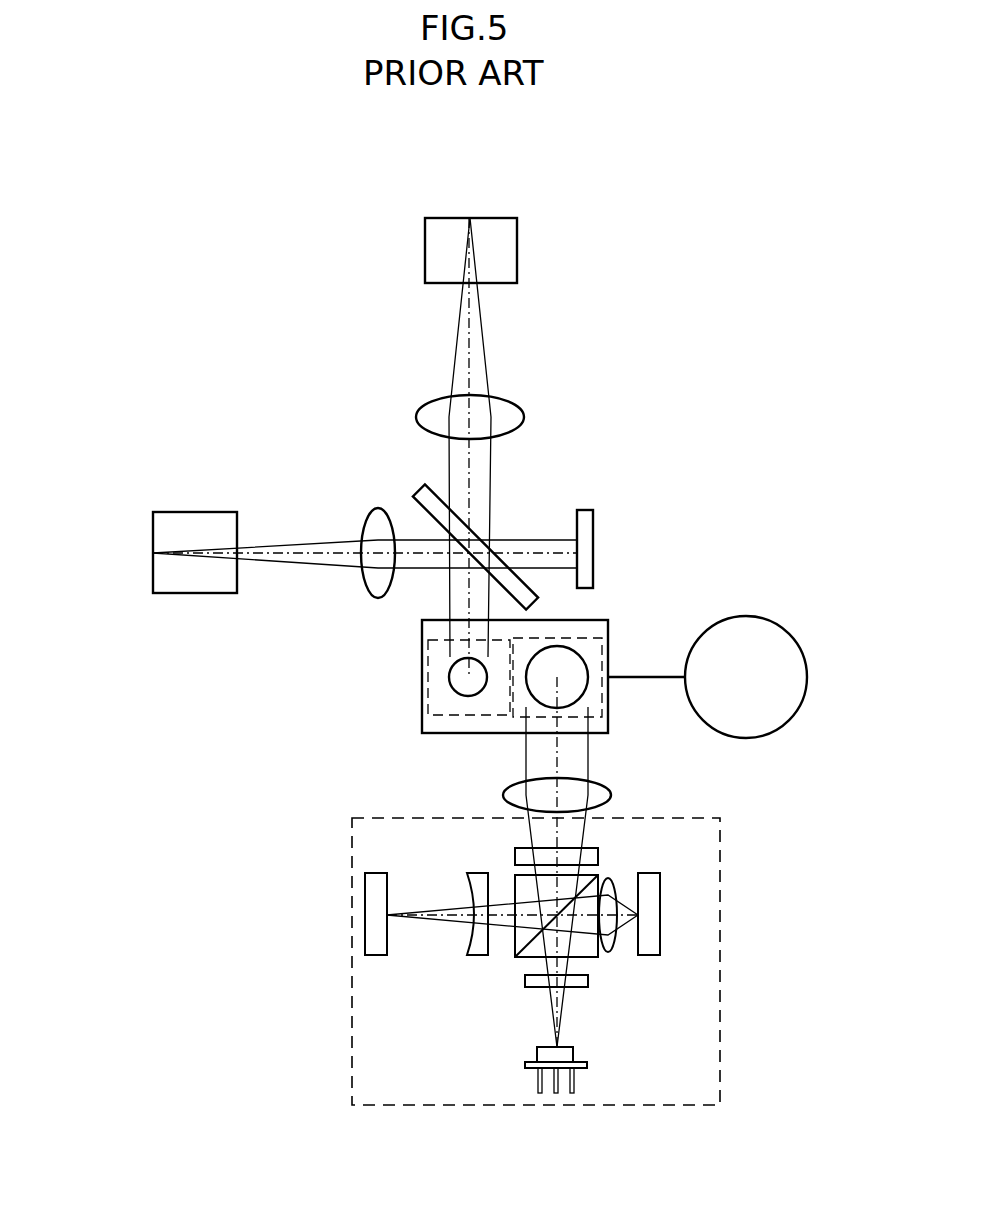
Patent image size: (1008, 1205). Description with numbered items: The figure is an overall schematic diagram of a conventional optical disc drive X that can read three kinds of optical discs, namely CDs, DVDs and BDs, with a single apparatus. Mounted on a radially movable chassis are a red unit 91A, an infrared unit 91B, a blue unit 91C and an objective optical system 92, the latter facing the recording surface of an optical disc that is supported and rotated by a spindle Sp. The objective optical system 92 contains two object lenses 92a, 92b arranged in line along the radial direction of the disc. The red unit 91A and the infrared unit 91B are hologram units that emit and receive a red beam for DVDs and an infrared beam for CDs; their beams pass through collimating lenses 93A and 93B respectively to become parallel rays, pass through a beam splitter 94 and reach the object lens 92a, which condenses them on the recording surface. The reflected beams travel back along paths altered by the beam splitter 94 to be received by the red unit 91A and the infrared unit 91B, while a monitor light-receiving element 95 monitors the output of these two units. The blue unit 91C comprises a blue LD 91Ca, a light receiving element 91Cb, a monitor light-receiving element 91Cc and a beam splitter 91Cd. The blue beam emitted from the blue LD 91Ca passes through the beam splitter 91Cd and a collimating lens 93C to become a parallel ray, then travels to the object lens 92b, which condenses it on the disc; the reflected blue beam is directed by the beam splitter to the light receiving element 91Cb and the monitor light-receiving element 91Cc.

The optical disc drive X is at (258, 322).
The red unit 91A is at (485, 217).
The infrared unit 91B is at (153, 553).
The collimating lens 93A is at (433, 400).
The collimating lens 93B is at (375, 510).
The collimating lens 93C is at (605, 793).
The beam splitter 94 is at (462, 522).
The monitor light-receiving element 95 is at (597, 517).
The objective optical system 92 is at (412, 712).
The object lens 92a is at (449, 680).
The object lens 92b is at (573, 652).
The spindle Sp is at (783, 643).
The blue unit 91C is at (524, 1002).
The blue LD 91Ca is at (573, 1058).
The light receiving element 91Cb is at (365, 914).
The monitor light-receiving element 91Cc is at (660, 916).
The beam splitter 91Cd is at (590, 957).